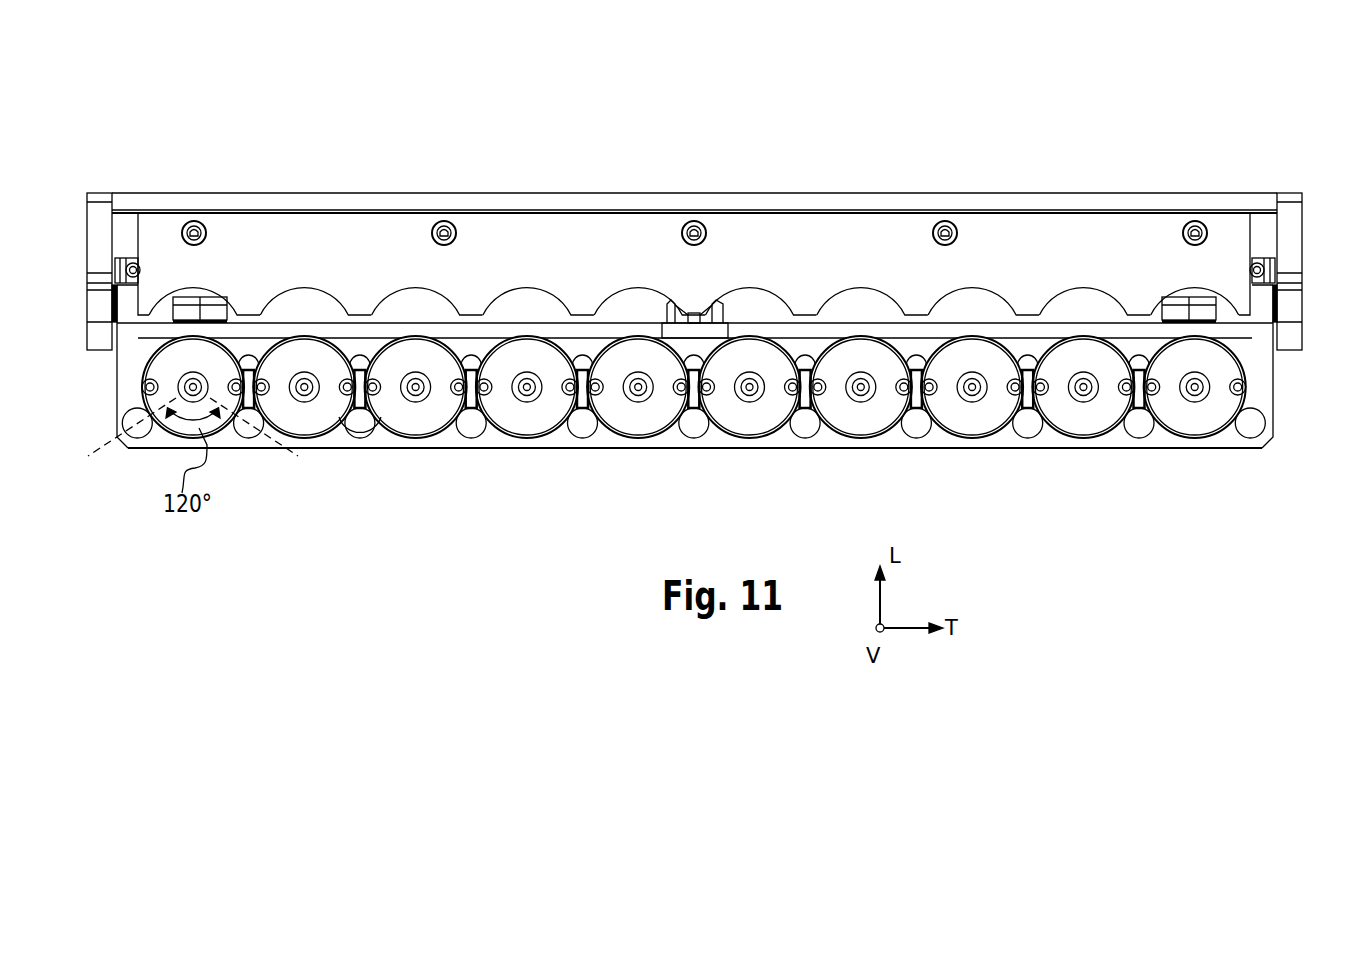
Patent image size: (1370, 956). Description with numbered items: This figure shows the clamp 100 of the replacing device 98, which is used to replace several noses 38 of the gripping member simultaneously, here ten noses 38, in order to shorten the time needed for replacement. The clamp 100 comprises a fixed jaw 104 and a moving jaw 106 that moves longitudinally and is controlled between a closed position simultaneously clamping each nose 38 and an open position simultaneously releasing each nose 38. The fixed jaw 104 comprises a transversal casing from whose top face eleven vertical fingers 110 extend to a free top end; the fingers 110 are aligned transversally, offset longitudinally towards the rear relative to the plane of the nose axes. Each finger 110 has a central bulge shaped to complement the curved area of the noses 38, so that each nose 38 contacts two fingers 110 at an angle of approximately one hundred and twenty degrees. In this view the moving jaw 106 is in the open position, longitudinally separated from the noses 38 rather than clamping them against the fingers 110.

The nose 38 is at (165, 362).
The device for replacing at least one nose 98 is at (935, 162).
The clamp 100 is at (1263, 390).
The fixed jaw 104 is at (827, 442).
The moving jaw 106 is at (837, 235).
The vertical finger 110 is at (144, 431).